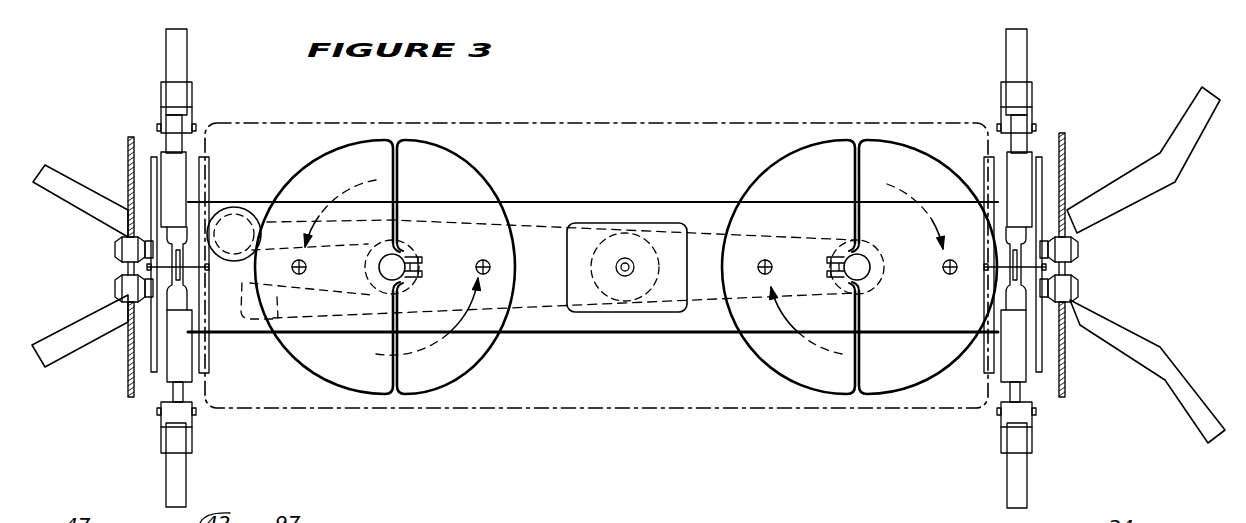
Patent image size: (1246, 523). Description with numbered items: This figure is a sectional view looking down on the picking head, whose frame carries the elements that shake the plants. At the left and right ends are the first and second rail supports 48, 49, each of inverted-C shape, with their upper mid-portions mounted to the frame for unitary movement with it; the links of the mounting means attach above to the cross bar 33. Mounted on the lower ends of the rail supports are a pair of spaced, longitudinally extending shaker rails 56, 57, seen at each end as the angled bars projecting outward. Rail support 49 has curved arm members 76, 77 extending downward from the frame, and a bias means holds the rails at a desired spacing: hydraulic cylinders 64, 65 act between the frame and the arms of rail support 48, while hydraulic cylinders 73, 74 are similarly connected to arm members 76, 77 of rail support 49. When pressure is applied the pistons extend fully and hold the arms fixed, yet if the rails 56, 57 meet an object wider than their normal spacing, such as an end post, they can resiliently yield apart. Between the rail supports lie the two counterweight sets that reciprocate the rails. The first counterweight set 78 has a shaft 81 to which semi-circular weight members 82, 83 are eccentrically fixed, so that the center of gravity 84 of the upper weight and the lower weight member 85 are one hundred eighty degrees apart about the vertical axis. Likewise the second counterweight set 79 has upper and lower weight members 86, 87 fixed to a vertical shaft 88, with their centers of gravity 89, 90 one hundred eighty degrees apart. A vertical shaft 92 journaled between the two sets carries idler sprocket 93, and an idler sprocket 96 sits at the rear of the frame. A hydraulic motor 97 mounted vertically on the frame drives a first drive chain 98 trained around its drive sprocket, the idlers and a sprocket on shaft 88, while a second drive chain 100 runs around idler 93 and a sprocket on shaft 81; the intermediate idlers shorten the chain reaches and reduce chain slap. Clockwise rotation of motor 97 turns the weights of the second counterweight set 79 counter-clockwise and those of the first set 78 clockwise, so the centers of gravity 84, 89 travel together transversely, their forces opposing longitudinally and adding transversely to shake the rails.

The cross bar 33 is at (1067, 512).
The first rail support 48 is at (992, 485).
The second rail support 49 is at (200, 488).
The shaker rail 56 is at (87, 320).
The shaker rail 57 is at (88, 205).
The hydraulic cylinder 64 is at (1020, 373).
The hydraulic cylinder 65 is at (1010, 187).
The hydraulic cylinder 73 is at (173, 348).
The hydraulic cylinder 74 is at (172, 190).
The arm member 76 is at (168, 470).
The arm member 77 is at (182, 59).
The first counterweight set 78 is at (857, 226).
The second counterweight set 79 is at (410, 118).
The shaft 81 is at (862, 267).
The weight member 82 is at (888, 162).
The weight member 83 is at (780, 179).
The center of gravity 84 is at (946, 273).
The lower weight member 85 is at (757, 267).
The upper weight member 86 is at (318, 182).
The lower weight member 87 is at (453, 173).
The vertical shaft 88 is at (395, 272).
The center of gravity 89 is at (307, 267).
The center of gravity 90 is at (476, 262).
The vertical shaft 92 is at (627, 263).
The idler sprocket 93 is at (578, 265).
The idler sprocket 96 is at (263, 333).
The hydraulic motor 97 is at (233, 235).
The first drive chain 98 is at (542, 316).
The second drive chain 100 is at (729, 300).